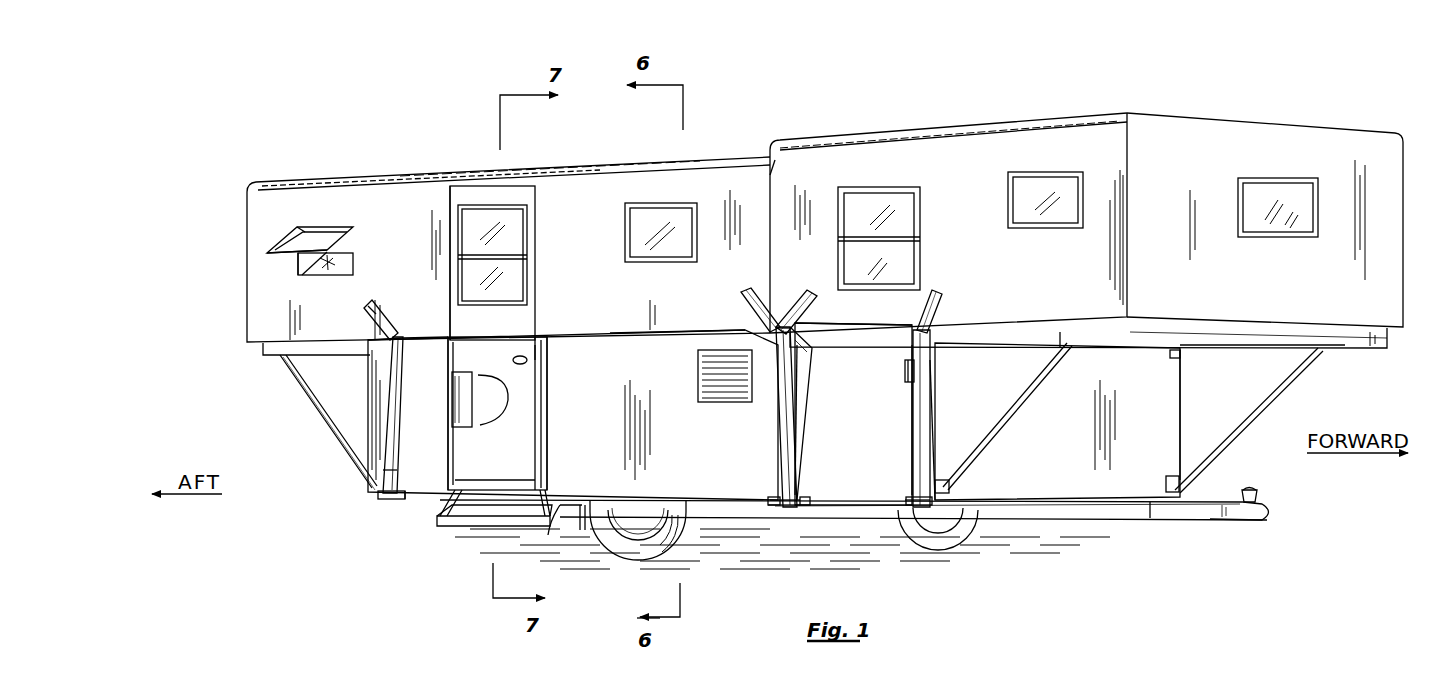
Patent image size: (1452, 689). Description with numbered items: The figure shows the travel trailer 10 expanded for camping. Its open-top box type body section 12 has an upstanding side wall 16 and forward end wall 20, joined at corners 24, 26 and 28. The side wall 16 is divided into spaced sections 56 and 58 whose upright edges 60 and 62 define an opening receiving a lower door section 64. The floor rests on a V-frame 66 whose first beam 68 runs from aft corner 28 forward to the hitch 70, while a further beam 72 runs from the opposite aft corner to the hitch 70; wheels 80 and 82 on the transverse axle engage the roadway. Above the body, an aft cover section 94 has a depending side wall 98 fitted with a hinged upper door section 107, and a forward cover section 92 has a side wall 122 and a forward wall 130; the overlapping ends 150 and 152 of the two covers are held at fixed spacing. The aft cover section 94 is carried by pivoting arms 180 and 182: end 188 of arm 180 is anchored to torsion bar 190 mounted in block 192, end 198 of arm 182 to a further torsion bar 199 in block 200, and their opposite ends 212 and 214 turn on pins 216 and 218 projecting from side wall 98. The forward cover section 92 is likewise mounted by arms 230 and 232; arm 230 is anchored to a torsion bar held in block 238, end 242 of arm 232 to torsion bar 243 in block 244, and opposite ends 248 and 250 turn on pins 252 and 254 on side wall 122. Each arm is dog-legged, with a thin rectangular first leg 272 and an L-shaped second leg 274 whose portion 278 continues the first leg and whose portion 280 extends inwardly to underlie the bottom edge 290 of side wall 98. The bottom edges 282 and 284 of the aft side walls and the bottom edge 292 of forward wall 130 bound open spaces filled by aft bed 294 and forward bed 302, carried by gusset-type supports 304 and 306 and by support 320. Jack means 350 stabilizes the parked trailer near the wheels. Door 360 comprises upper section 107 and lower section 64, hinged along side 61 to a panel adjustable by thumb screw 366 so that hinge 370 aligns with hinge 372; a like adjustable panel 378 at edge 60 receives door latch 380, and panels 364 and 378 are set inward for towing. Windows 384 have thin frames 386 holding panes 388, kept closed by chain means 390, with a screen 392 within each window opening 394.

The trailer 10 is at (1092, 92).
The body section 12 is at (1197, 383).
The side wall 16 is at (684, 424).
The end wall 20 is at (1074, 404).
The corner 24 is at (932, 466).
The corner 26 is at (1172, 410).
The aft corner 28 is at (370, 380).
The side wall section 56 is at (580, 472).
The side wall section 58 is at (432, 490).
The upright edge 60 is at (450, 366).
The side of lower door section 61 is at (450, 350).
The upright edge 62 is at (549, 407).
The lower door section 64 is at (501, 456).
The V-frame 66 is at (1147, 508).
The first beam 68 is at (1040, 509).
The hitch 70 is at (1272, 510).
The further beam 72 is at (1185, 503).
The wheel 80 is at (620, 543).
The wheel 82 is at (972, 524).
The forward cover section 92 is at (978, 120).
The aft cover section 94 is at (622, 153).
The side wall 98 is at (586, 244).
The upper door section 107 is at (508, 327).
The side wall 122 is at (980, 194).
The forward wall 130 is at (1288, 269).
The forward end of aft cover section 150 is at (762, 170).
The overlapping end 152 is at (784, 148).
The arm 180 is at (400, 450).
The arm 182 is at (800, 386).
The end of arm 188 is at (388, 474).
The torsion bar 190 is at (380, 492).
The block 192 is at (403, 499).
The end of arm 198 is at (776, 480).
The torsion bar 199 is at (770, 503).
The block 200 is at (770, 499).
The end of arm 212 is at (372, 321).
The end of arm 214 is at (750, 300).
The pin 216 is at (380, 312).
The pin 218 is at (760, 283).
The arm 230 is at (798, 440).
The arm 232 is at (790, 506).
The block 238 is at (810, 497).
The end of arm 242 is at (914, 490).
The torsion bar 243 is at (910, 500).
The block 244 is at (906, 504).
The end of arm 248 is at (809, 305).
The end of arm 250 is at (940, 300).
The pin 252 is at (806, 297).
The pin 254 is at (940, 290).
The first leg 272 is at (878, 327).
The second leg 274 is at (932, 418).
The portion of second leg 278 is at (928, 380).
The portion of second leg 280 is at (928, 366).
The bottom edge 282 is at (619, 336).
The bottom edge 284 is at (787, 322).
The bottom edge 290 is at (1058, 332).
The bottom edge 292 is at (1240, 334).
The aft bed 294 is at (283, 348).
The forward bed 302 is at (1282, 340).
The gusset-type support 304 is at (1012, 440).
The support 306 is at (1280, 405).
The support 320 is at (336, 426).
The jack means 350 is at (600, 549).
The door 360 is at (542, 302).
The panel 364 is at (480, 385).
The thumb screw 366 is at (478, 372).
The hinge 370 is at (462, 385).
The hinge 372 is at (451, 278).
The laterally adjustable panel 378 is at (549, 434).
The door latch 380 is at (549, 368).
The window 384 is at (325, 228).
The frame member 386 is at (297, 230).
The pane 388 is at (290, 243).
The chain means 390 is at (302, 273).
The screen 392 is at (352, 252).
The window opening 394 is at (320, 265).